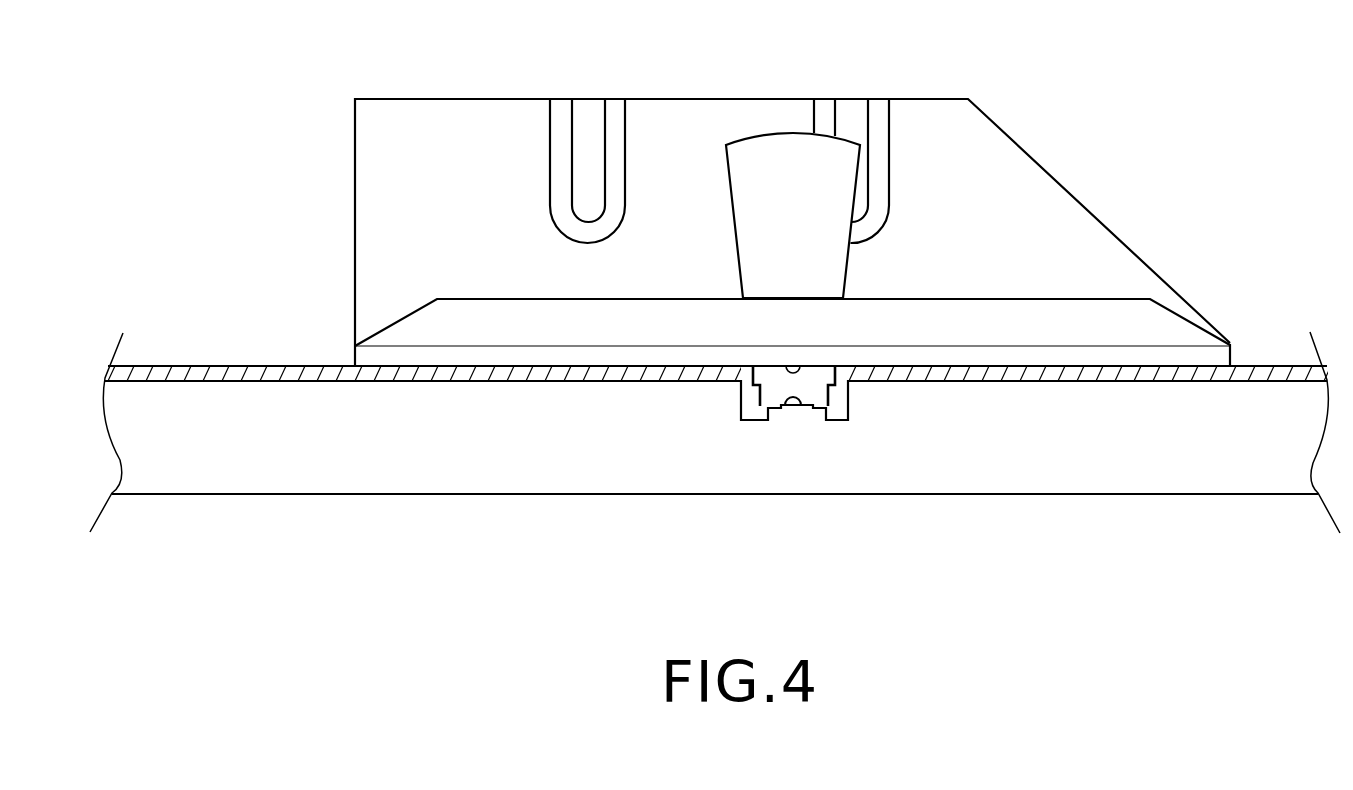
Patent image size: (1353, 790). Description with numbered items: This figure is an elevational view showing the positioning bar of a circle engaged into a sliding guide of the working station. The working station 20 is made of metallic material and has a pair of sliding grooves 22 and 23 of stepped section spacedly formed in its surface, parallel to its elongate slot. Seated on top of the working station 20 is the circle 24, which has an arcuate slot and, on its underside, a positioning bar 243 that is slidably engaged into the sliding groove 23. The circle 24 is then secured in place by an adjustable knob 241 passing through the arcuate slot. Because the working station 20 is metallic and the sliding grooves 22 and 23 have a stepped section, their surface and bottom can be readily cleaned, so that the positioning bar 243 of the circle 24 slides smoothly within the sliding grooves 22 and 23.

The working station 20 is at (1260, 372).
The circle 24 is at (1007, 173).
The adjustable knob 241 is at (768, 160).
The sliding groove 22 is at (833, 461).
The sliding groove 23 is at (826, 405).
The positioning bar 243 is at (787, 390).